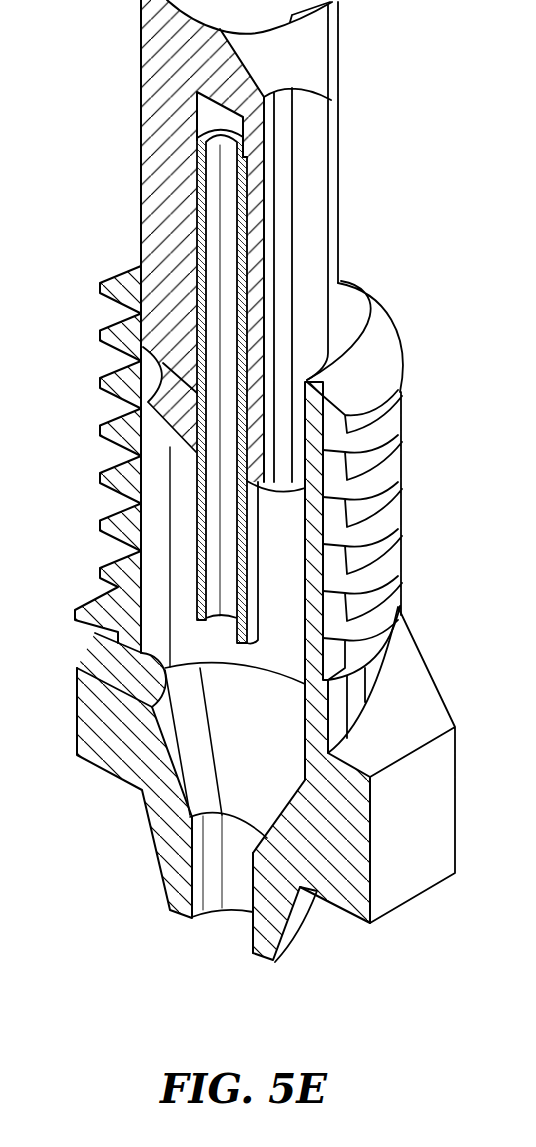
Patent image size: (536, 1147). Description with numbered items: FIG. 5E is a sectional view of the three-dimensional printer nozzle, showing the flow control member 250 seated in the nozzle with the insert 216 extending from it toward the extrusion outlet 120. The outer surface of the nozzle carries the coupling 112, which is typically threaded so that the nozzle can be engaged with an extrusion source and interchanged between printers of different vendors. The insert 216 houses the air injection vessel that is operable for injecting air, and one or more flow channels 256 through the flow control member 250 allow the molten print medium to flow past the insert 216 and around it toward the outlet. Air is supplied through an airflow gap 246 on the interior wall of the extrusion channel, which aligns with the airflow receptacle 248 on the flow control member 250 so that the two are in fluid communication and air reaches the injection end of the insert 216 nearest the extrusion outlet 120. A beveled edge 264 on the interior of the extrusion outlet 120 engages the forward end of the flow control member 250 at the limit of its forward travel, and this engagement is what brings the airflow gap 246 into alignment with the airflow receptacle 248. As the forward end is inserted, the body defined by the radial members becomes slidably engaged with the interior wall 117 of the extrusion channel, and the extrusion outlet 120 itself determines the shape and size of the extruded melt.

The flow control member 250 is at (182, 59).
The insert 216 is at (215, 188).
The flow channels 256 is at (303, 237).
The coupling 112 is at (393, 412).
The airflow receptacle 248 is at (183, 402).
The airflow gap 246 is at (100, 656).
The beveled edge 264 is at (173, 783).
The extrusion outlet 120 is at (196, 917).
The interior wall 117 is at (196, 867).